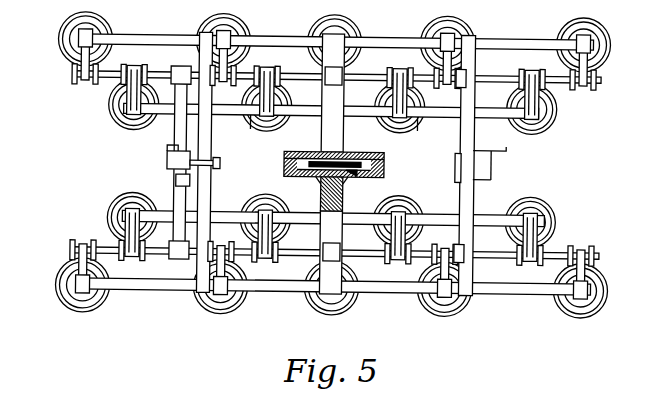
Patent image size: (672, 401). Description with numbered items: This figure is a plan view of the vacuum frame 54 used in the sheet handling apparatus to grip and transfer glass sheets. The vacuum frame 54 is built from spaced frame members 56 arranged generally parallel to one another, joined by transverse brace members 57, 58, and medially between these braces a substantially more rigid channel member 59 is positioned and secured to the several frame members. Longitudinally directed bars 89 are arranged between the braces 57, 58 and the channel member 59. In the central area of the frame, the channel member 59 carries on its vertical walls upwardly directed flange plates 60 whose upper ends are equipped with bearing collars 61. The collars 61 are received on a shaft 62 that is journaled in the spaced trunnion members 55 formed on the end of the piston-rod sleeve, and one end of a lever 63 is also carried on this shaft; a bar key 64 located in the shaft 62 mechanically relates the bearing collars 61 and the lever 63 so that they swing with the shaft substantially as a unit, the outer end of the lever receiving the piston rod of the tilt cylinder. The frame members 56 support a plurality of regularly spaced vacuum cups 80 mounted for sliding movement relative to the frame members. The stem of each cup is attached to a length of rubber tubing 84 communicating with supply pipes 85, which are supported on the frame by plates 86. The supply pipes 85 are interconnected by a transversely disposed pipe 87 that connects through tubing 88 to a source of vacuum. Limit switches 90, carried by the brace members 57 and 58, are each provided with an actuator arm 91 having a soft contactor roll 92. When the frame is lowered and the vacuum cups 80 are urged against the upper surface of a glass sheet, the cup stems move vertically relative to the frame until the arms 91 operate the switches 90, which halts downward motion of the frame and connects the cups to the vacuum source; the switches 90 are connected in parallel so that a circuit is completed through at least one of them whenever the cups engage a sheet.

The vacuum frame 54 is at (110, 147).
The trunnion members 55 is at (286, 176).
The frame members 56 is at (152, 40).
The transverse brace member 57 is at (205, 195).
The transverse brace member 58 is at (468, 202).
The channel member 59 is at (339, 237).
The flange plates 60 is at (322, 191).
The bearing collars 61 is at (314, 154).
The shaft 62 is at (381, 164).
The lever 63 is at (324, 207).
The bar key 64 is at (354, 177).
The vacuum cups 80 is at (58, 38).
The rubber tubing 84 is at (67, 62).
The supply pipes 85 is at (102, 78).
The plates 86 is at (248, 84).
The transversely disposed pipe 87 is at (167, 155).
The tubing 88 is at (221, 165).
The longitudinally directed bars 89 is at (332, 139).
The limit switches 90 is at (168, 166).
The actuator arm 91 is at (491, 149).
The soft contactor roll 92 is at (504, 150).